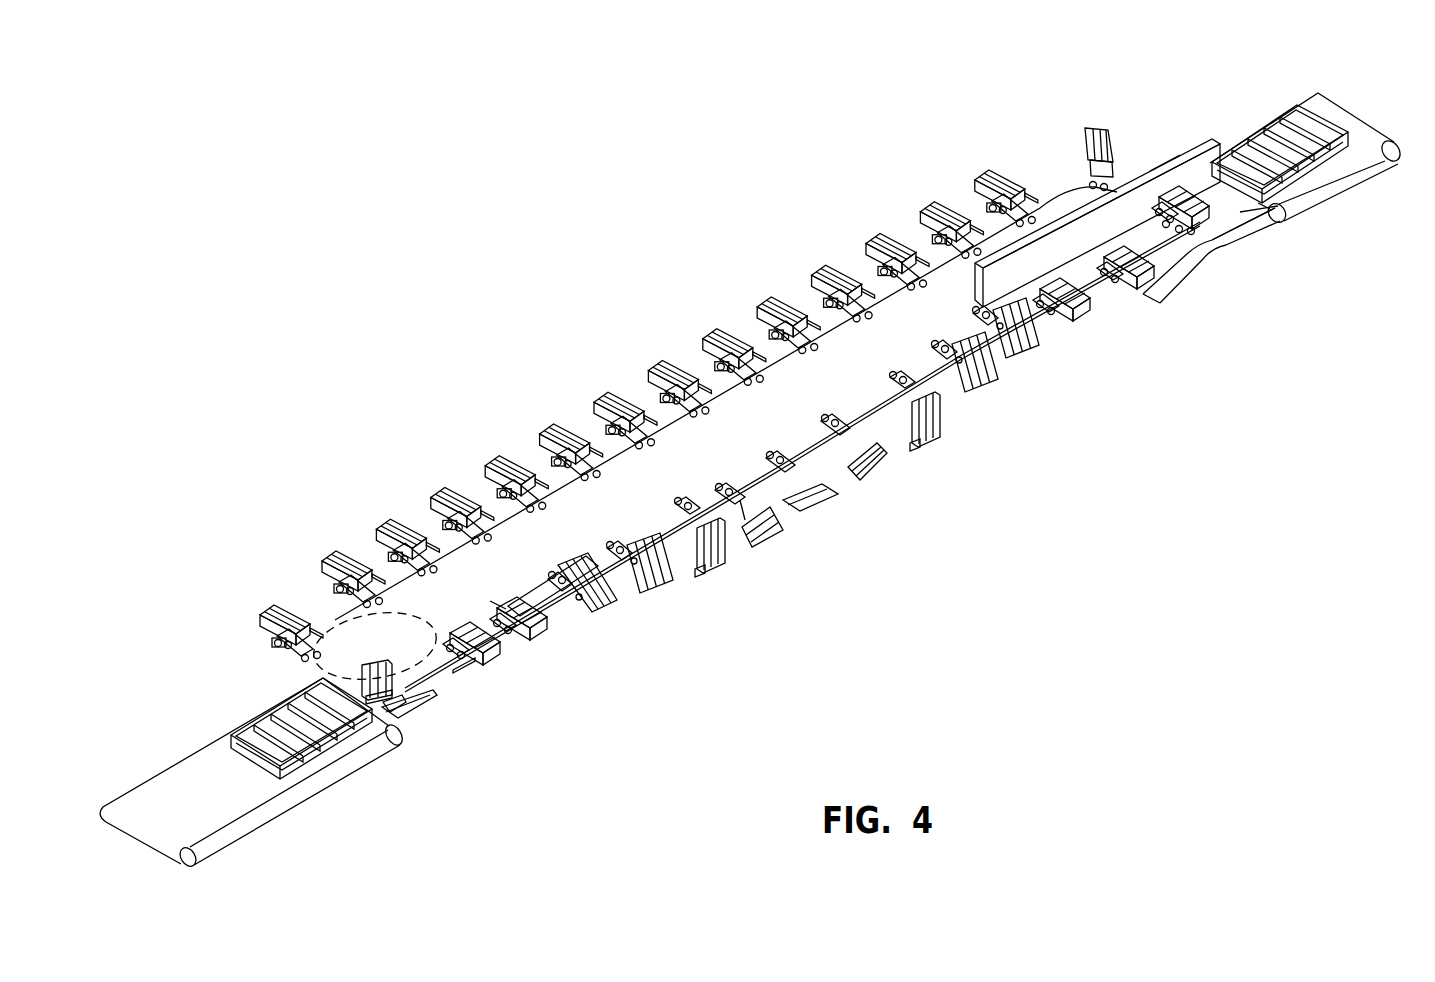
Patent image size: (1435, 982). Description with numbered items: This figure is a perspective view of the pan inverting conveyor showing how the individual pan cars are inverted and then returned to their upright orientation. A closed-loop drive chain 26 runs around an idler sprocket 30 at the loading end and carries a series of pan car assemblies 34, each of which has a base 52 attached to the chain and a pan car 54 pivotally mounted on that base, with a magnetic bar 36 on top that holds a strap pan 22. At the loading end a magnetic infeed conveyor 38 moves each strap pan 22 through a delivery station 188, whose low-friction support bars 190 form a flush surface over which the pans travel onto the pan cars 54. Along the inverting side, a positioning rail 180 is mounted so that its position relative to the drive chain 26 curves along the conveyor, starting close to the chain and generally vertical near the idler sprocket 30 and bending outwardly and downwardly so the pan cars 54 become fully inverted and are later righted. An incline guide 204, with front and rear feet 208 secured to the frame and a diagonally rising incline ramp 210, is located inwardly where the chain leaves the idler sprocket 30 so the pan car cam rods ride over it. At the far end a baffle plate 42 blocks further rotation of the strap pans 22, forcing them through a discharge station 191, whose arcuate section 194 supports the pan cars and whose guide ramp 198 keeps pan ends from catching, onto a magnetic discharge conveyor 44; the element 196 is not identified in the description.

The strap pan 22 is at (297, 763).
The drive chain 26 is at (828, 335).
The idler sprocket 30 is at (409, 616).
The pan car assembly 34 is at (322, 567).
The magnetic bar 36 is at (437, 500).
The magnetic infeed conveyor 38 is at (330, 753).
The baffle plate 42 is at (1099, 247).
The magnetic belt-type discharge conveyor 44 is at (1343, 182).
The base 52 is at (737, 457).
The pan car 54 is at (765, 540).
The positioning rail 180 is at (522, 640).
The delivery station 188 is at (437, 680).
The support bar 190 is at (437, 695).
The discharge station 191 is at (1165, 146).
The arcuate section 194 is at (1258, 221).
The guide bar 196 is at (1223, 232).
The guide ramp 198 is at (1185, 277).
The incline guide 204 is at (560, 557).
The foot 208 is at (617, 590).
The incline ramp 210 is at (540, 585).